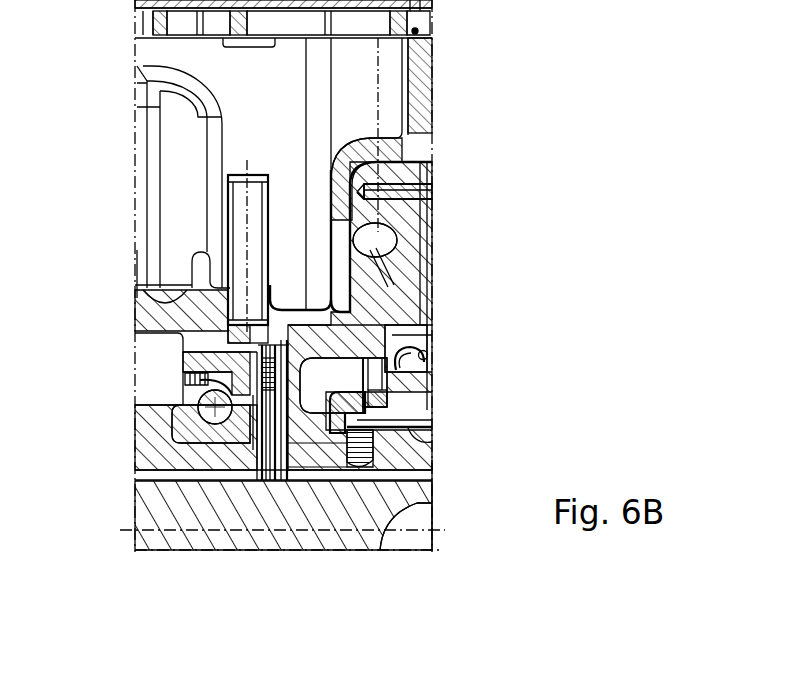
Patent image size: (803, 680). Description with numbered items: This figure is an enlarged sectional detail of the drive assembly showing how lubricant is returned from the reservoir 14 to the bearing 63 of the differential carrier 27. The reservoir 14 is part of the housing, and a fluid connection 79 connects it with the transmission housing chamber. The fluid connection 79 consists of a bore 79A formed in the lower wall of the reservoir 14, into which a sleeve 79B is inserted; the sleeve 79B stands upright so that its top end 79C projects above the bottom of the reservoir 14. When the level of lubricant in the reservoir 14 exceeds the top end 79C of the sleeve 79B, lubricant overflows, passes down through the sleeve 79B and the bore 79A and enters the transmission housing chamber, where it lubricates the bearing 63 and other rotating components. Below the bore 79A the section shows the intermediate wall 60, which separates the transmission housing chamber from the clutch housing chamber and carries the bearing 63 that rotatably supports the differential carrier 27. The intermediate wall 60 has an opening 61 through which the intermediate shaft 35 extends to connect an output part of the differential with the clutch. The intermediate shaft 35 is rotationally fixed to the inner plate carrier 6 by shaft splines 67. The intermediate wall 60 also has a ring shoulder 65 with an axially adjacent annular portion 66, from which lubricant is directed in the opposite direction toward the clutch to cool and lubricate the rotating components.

The inner plate carrier 6 is at (372, 427).
The reservoir 14 is at (317, 123).
The differential carrier 27 is at (150, 450).
The intermediate shaft 35 is at (150, 500).
The intermediate wall 60 is at (420, 360).
The opening 61 is at (277, 460).
The bearing 63 is at (185, 385).
The ring shoulder 65 is at (293, 460).
The annular portion 66 is at (280, 480).
The shaft splines 67 is at (380, 448).
The fluid connection 79 is at (260, 157).
The bore 79A is at (322, 358).
The sleeve 79B is at (268, 228).
The top end 79C is at (228, 181).